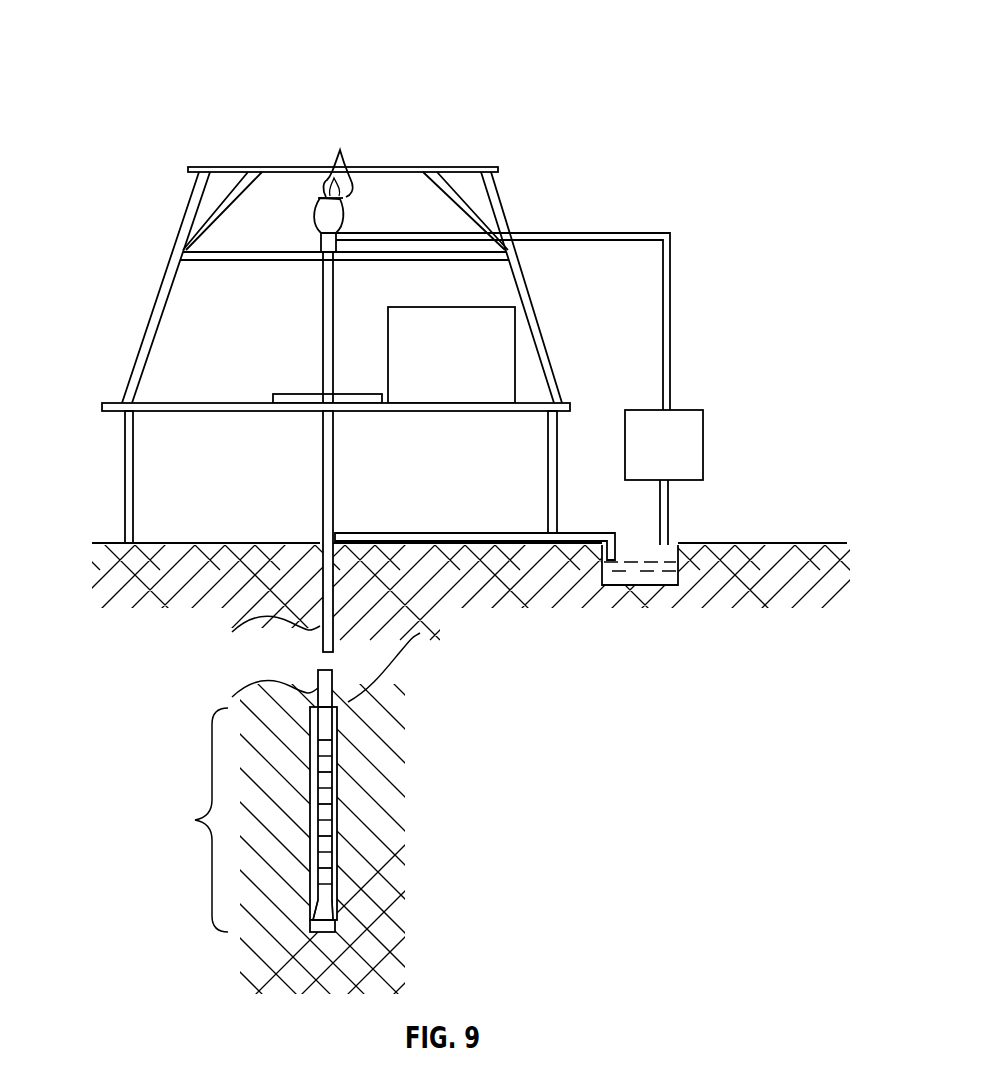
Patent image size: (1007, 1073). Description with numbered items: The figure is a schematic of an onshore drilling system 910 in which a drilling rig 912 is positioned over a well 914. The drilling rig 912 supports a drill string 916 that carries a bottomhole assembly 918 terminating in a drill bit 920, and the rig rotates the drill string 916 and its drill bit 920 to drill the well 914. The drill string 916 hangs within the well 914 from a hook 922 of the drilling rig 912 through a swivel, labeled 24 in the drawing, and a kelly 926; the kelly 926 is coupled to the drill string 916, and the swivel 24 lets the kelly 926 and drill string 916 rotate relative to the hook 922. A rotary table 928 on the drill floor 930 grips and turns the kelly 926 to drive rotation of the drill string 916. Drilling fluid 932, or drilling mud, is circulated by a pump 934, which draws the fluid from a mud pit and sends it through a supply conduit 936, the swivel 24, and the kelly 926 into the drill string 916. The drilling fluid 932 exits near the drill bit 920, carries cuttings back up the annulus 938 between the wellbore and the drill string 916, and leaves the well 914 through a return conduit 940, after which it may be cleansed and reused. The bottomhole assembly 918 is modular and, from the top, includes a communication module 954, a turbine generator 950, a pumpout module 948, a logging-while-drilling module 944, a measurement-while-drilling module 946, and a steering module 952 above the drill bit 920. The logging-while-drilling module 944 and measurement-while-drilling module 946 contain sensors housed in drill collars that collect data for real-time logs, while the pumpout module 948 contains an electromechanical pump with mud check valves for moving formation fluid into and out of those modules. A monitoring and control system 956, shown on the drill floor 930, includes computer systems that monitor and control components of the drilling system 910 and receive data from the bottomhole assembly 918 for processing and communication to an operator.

The drilling system 910 is at (121, 90).
The drilling rig 912 is at (160, 331).
The flare stack 24 is at (314, 236).
The hook 922 is at (341, 200).
The supply conduit 936 is at (604, 232).
The kelly 926 is at (322, 338).
The monitoring and control system 956 is at (457, 307).
The rotary table 928 is at (318, 394).
The drill floor 930 is at (110, 403).
The pump 934 is at (682, 410).
The drilling fluid 932 is at (634, 548).
The return conduit 940 is at (438, 533).
The well 914 is at (321, 542).
The annulus 938 is at (333, 634).
The drill string 916 is at (319, 680).
The bottomhole assembly 918 is at (242, 819).
The communication module 954 is at (337, 706).
The turbine generator 950 is at (337, 742).
The pumpout module 948 is at (337, 772).
The logging-while-drilling module 944 is at (337, 804).
The measurement-while-drilling module 946 is at (338, 836).
The steering module 952 is at (337, 866).
The drill bit 920 is at (337, 918).